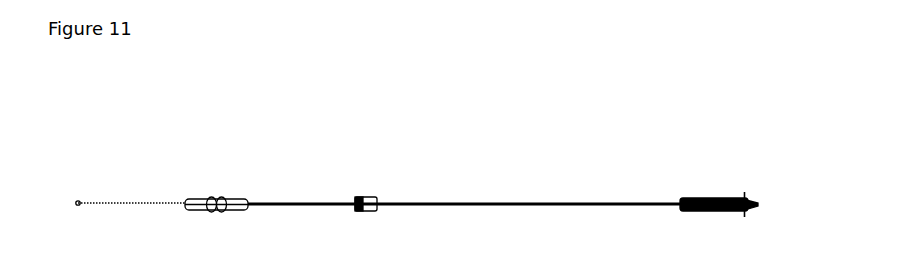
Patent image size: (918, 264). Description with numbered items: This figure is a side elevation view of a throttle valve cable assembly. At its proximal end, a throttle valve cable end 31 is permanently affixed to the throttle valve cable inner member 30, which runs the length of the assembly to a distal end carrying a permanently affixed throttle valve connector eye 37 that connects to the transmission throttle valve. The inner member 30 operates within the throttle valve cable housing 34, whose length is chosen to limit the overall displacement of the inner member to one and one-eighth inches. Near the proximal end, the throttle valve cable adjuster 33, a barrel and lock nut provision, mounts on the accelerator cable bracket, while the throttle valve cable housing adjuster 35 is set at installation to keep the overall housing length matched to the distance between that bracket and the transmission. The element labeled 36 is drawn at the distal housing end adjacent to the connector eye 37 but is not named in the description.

The throttle valve cable inner member 30 is at (128, 206).
The throttle valve cable end 31 is at (77, 201).
The throttle valve cable adjuster 33 is at (210, 196).
The throttle valve cable housing 34 is at (304, 202).
The throttle valve cable housing adjuster 35 is at (368, 199).
The distal body 36 is at (745, 192).
The throttle valve connector eye 37 is at (757, 202).